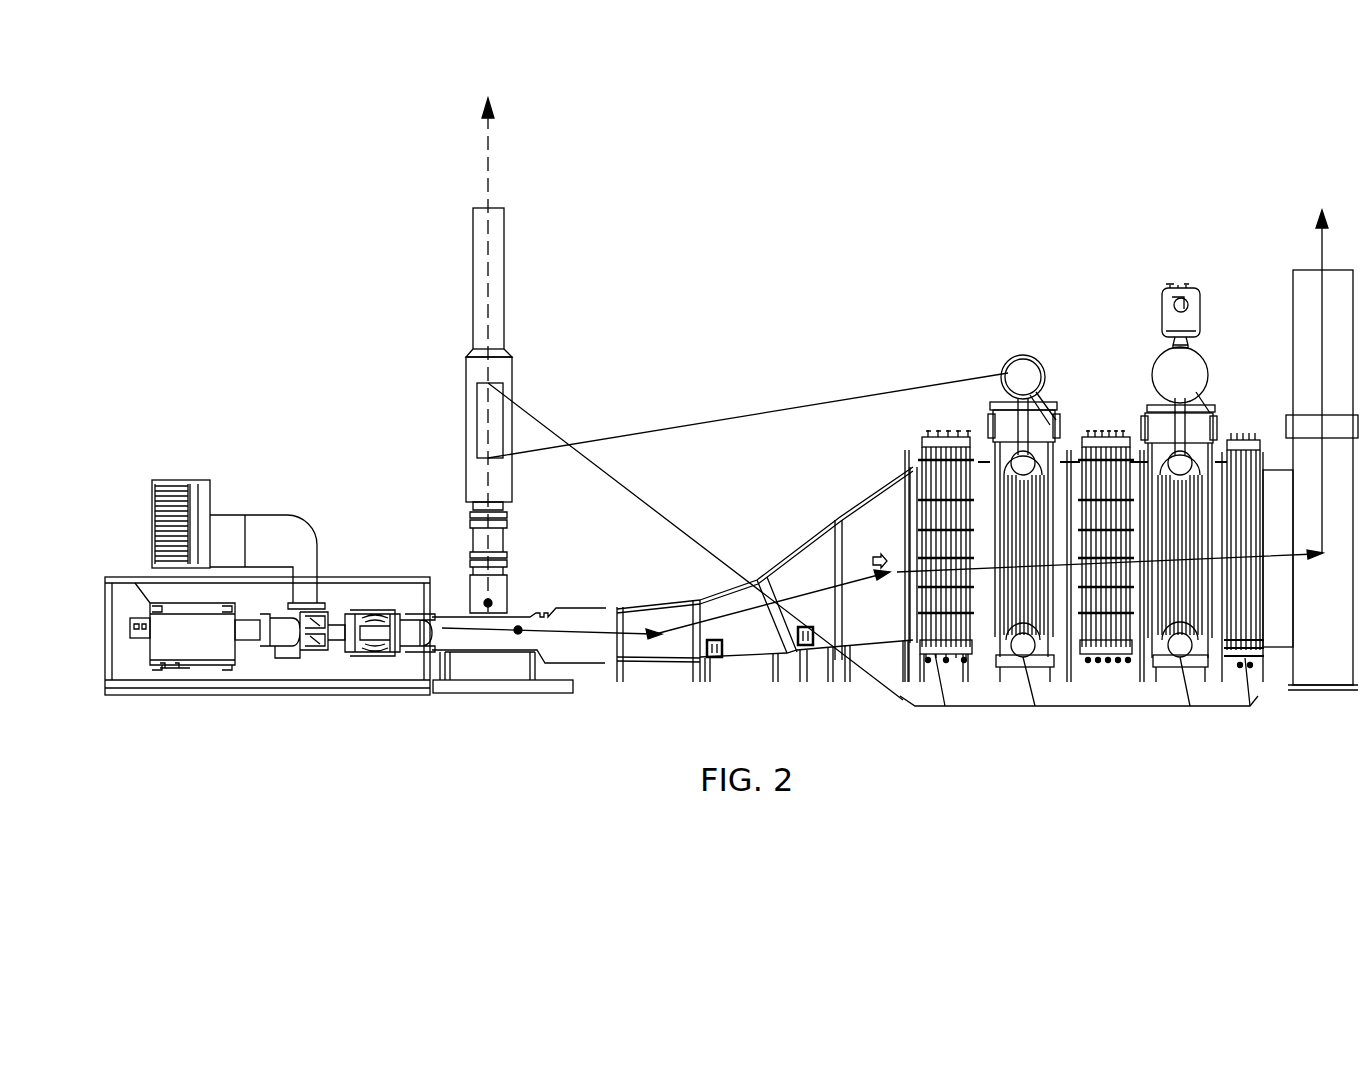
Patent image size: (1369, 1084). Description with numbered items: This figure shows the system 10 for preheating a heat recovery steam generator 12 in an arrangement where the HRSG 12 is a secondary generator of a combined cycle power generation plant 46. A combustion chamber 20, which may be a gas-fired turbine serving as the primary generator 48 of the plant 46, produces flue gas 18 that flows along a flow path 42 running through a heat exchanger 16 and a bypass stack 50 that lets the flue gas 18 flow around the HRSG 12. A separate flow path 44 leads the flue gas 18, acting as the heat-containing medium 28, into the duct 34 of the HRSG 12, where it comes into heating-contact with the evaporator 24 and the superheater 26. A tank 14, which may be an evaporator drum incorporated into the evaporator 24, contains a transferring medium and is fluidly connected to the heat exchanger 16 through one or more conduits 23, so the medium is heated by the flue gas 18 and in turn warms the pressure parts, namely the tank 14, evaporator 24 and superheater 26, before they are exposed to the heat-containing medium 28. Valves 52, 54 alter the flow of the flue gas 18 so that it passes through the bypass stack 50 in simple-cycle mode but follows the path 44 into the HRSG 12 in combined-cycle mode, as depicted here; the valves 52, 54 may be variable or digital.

The system 10 is at (848, 215).
The heat recovery steam generator 12 is at (848, 335).
The tank 14 is at (1023, 352).
The heat exchanger 16 is at (476, 422).
The flue gas 18 is at (438, 612).
The combustion chamber 20 is at (370, 607).
The conduits 23 is at (618, 440).
The evaporator 24 is at (1005, 437).
The superheater 26 is at (915, 452).
The heat-containing medium 28 is at (802, 585).
The duct 34 is at (636, 600).
The flow path 42 is at (505, 172).
The flow path 44 is at (808, 574).
The combined cycle power generation plant 46 is at (312, 148).
The primary generator 48 is at (345, 503).
The bypass stack 50 is at (504, 293).
The valve 52 is at (490, 603).
The valve 54 is at (518, 634).